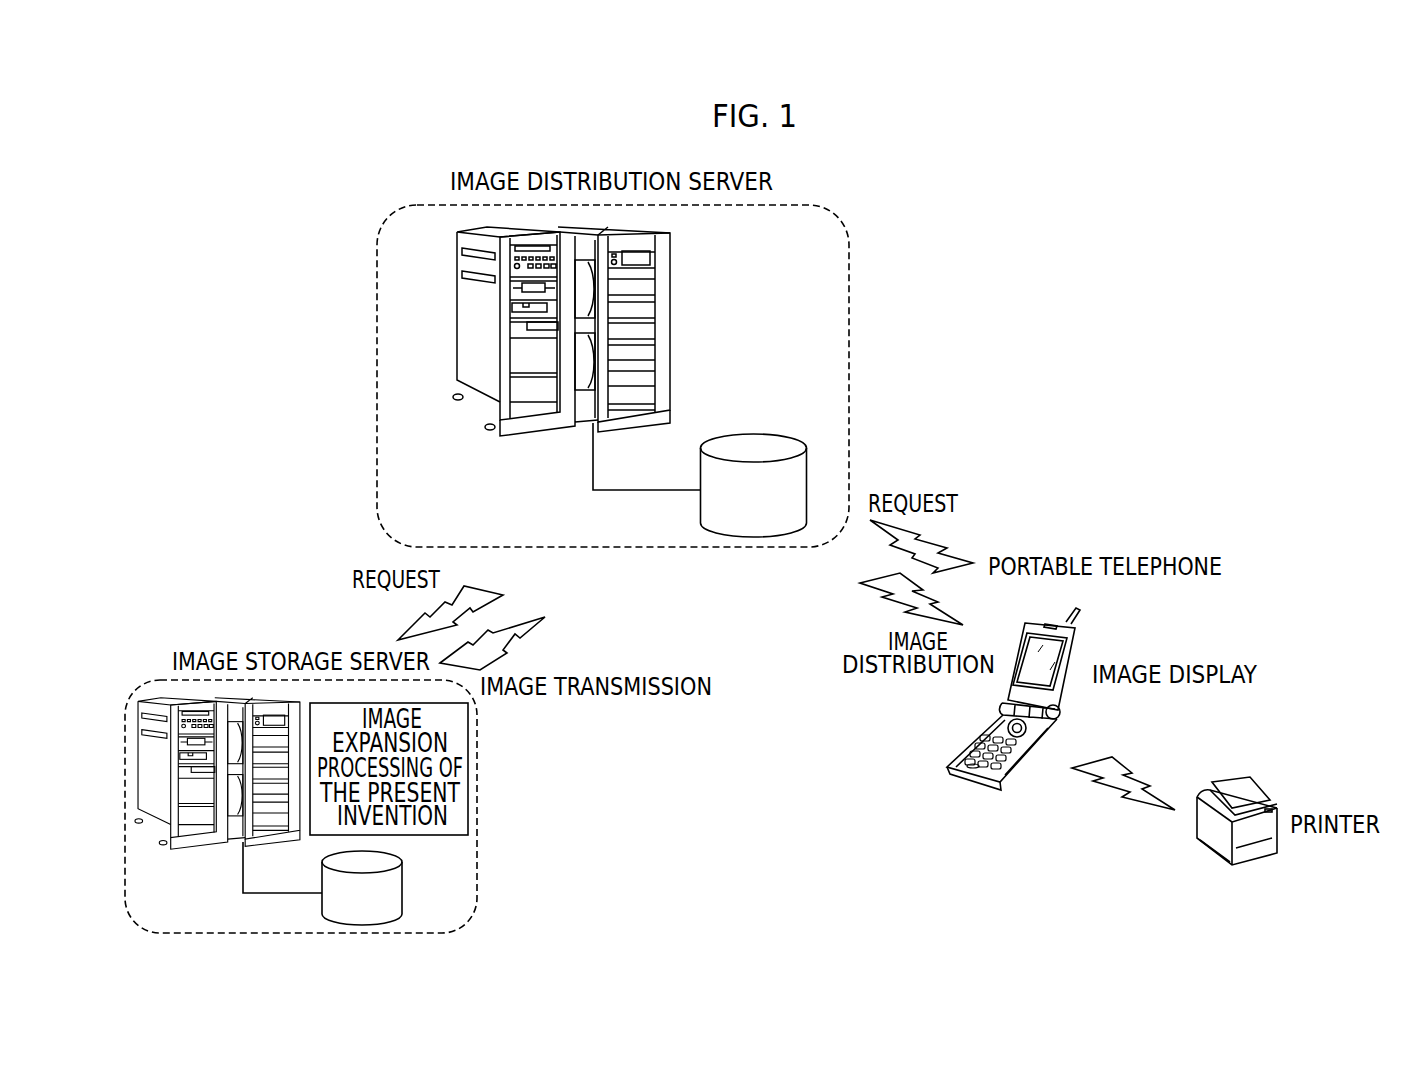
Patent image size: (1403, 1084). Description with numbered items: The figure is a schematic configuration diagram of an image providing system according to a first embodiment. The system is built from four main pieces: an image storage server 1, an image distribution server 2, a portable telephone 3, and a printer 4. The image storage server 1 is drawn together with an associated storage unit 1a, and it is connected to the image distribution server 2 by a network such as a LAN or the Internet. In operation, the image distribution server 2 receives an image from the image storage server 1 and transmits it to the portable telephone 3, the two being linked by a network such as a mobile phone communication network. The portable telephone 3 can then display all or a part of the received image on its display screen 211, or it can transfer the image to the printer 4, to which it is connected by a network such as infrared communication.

The image storage server 1 is at (301, 775).
The image database of image storage server 1a is at (403, 887).
The image distribution server 2 is at (850, 348).
The portable telephone 3 is at (1047, 699).
The display screen 211 is at (1047, 655).
The printer 4 is at (1270, 792).